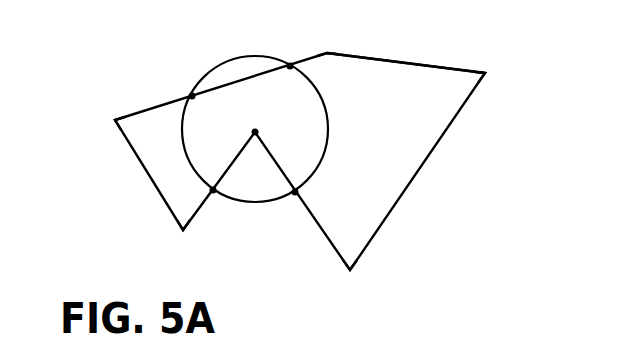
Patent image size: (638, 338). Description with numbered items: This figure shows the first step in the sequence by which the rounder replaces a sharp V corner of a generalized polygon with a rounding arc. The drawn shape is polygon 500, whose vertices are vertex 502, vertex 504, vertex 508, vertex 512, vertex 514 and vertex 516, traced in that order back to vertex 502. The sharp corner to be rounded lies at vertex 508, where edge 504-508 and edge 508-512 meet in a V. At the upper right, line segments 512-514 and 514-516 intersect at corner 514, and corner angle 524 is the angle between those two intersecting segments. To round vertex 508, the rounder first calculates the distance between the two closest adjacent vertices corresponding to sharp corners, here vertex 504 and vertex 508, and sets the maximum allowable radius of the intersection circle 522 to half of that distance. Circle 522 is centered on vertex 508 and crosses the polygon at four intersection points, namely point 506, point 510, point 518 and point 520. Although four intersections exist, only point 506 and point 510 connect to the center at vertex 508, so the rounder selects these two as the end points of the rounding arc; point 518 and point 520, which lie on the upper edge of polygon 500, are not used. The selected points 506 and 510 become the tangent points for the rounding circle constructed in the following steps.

The polygon 500 is at (375, 140).
The vertex 502 is at (100, 117).
The vertex 504 is at (182, 241).
The intersection point 506 is at (222, 210).
The vertex 508 is at (256, 119).
The intersection point 510 is at (292, 211).
The vertex 512 is at (350, 282).
The vertex 514 is at (501, 74).
The vertex 516 is at (335, 41).
The intersection point 518 is at (292, 52).
The intersection point 520 is at (175, 85).
The intersection circle 522 is at (320, 95).
The corner angle 524 is at (406, 78).